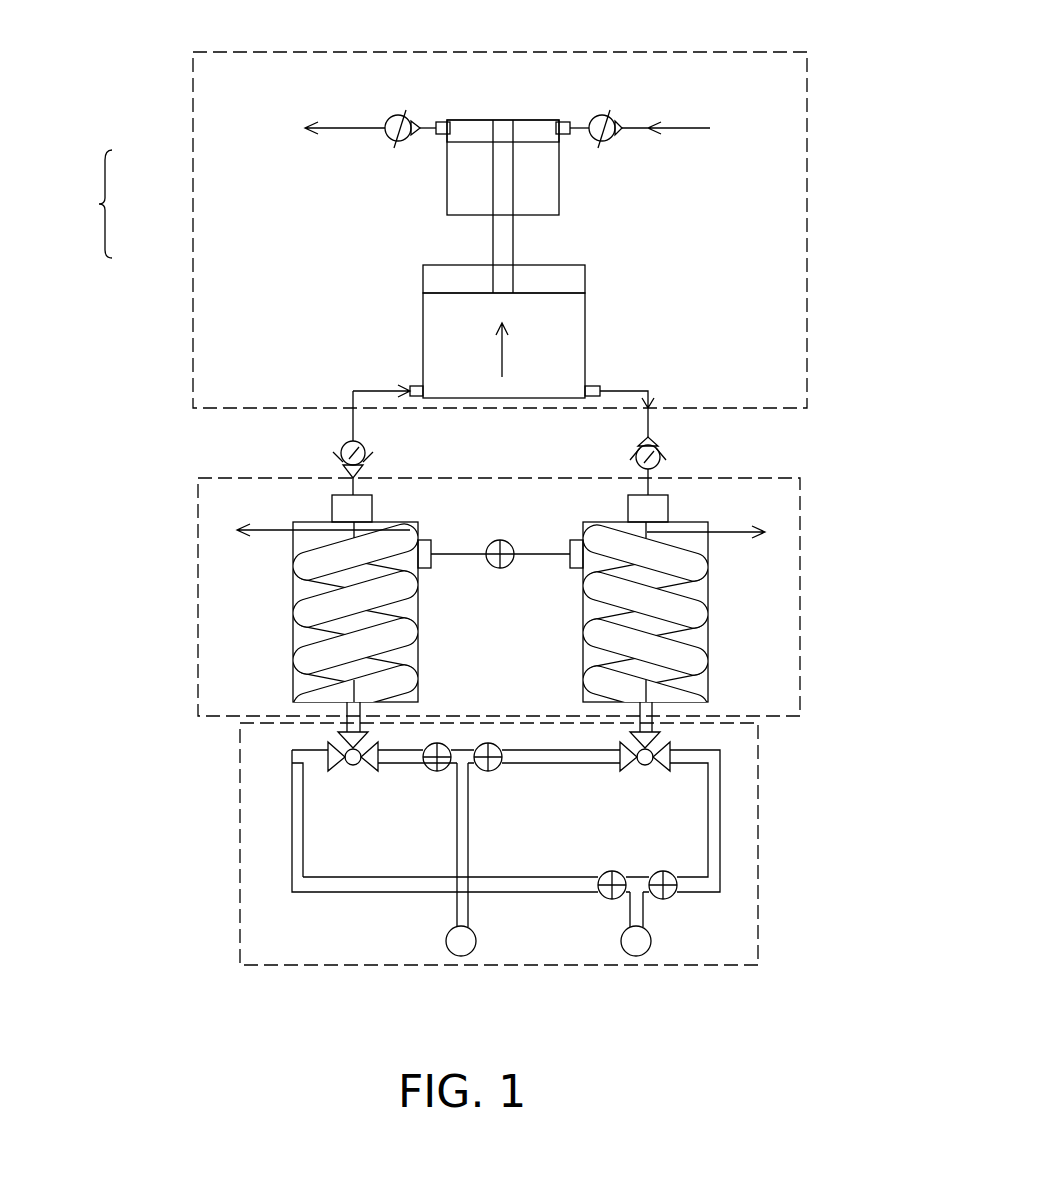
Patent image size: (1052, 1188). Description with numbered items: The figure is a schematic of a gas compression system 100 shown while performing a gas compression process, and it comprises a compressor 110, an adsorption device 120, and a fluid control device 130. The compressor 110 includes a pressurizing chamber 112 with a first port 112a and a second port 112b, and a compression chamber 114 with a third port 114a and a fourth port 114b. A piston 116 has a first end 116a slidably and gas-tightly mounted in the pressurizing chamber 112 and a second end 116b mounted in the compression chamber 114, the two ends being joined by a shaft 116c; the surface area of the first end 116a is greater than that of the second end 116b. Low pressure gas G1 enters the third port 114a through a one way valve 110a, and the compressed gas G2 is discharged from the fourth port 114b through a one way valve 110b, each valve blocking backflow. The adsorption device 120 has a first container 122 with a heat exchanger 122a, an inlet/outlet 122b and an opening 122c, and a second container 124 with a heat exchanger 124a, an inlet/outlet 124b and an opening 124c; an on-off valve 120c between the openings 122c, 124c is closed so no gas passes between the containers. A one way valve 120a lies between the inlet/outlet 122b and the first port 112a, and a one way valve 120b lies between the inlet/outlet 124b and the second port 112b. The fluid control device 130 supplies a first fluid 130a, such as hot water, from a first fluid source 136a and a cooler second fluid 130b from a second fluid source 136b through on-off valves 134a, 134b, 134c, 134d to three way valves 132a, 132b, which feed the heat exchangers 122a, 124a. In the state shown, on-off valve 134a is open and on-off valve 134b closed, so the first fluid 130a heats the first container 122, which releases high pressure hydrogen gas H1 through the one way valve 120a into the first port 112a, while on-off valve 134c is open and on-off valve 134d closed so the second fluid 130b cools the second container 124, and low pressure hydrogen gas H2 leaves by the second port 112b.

The gas compression system 100 is at (826, 1049).
The compressor 110 is at (807, 222).
The one way valve 110a is at (605, 125).
The one way valve 110b is at (397, 115).
The pressurizing chamber 112 is at (585, 295).
The first port 112a is at (413, 386).
The second port 112b is at (597, 386).
The compression chamber 114 is at (560, 168).
The third port 114a is at (562, 120).
The fourth port 114b is at (443, 120).
The piston 116 is at (88, 204).
The first end 116a is at (437, 277).
The second end 116b is at (470, 133).
The shaft 116c is at (500, 237).
The adsorption device 120 is at (800, 605).
The one way valve 120a is at (362, 447).
The one way valve 120b is at (636, 454).
The on-off valve 120c is at (497, 540).
The first container 122 is at (271, 621).
The heat exchanger 122a is at (293, 585).
The inlet/outlet 122b is at (347, 505).
The opening 122c is at (425, 568).
The second container 124 is at (727, 622).
The heat exchanger 124a is at (710, 545).
The inlet/outlet 124b is at (660, 512).
The opening 124c is at (575, 568).
The fluid control device 130 is at (758, 840).
The first fluid 130a is at (293, 665).
The second fluid 130b is at (693, 660).
The three way valve 132a is at (330, 750).
The three way valve 132b is at (658, 734).
The on-off valve 134a is at (432, 772).
The on-off valve 134b is at (495, 772).
The on-off valve 134c is at (673, 898).
The on-off valve 134d is at (600, 900).
The first fluid source 136a is at (450, 953).
The second fluid source 136b is at (618, 950).
The low pressure gas G1 is at (690, 130).
The compressed gas G2 is at (325, 127).
The high pressure hydrogen gas H1 is at (353, 484).
The low pressure hydrogen gas H2 is at (650, 482).